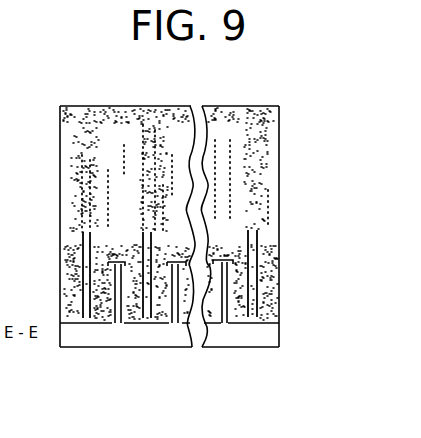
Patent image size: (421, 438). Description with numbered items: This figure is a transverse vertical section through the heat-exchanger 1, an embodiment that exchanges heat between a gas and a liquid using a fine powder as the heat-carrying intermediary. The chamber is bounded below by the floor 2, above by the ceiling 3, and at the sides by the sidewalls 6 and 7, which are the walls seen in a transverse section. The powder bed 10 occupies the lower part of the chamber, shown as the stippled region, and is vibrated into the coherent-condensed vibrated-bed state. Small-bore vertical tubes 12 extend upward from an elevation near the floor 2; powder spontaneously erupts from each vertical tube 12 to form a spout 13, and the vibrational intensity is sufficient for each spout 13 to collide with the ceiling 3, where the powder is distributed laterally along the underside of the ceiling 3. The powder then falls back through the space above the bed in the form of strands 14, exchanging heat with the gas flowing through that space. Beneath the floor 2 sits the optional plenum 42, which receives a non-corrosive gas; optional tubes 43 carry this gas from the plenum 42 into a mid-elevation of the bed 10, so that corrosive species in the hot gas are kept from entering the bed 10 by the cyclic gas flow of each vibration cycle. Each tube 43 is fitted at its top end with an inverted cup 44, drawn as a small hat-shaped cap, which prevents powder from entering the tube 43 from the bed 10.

The heat-exchanger 1 is at (221, 90).
The floor 2 is at (72, 323).
The ceiling 3 is at (113, 106).
The sidewall 6 is at (60, 173).
The sidewall 7 is at (280, 290).
The powder bed 10 is at (72, 288).
The vertical tube 12 is at (88, 240).
The spout 13 is at (87, 162).
The strand 14 is at (163, 215).
The plenum 42 is at (257, 333).
The tube 43 is at (115, 305).
The inverted cup 44 is at (115, 261).